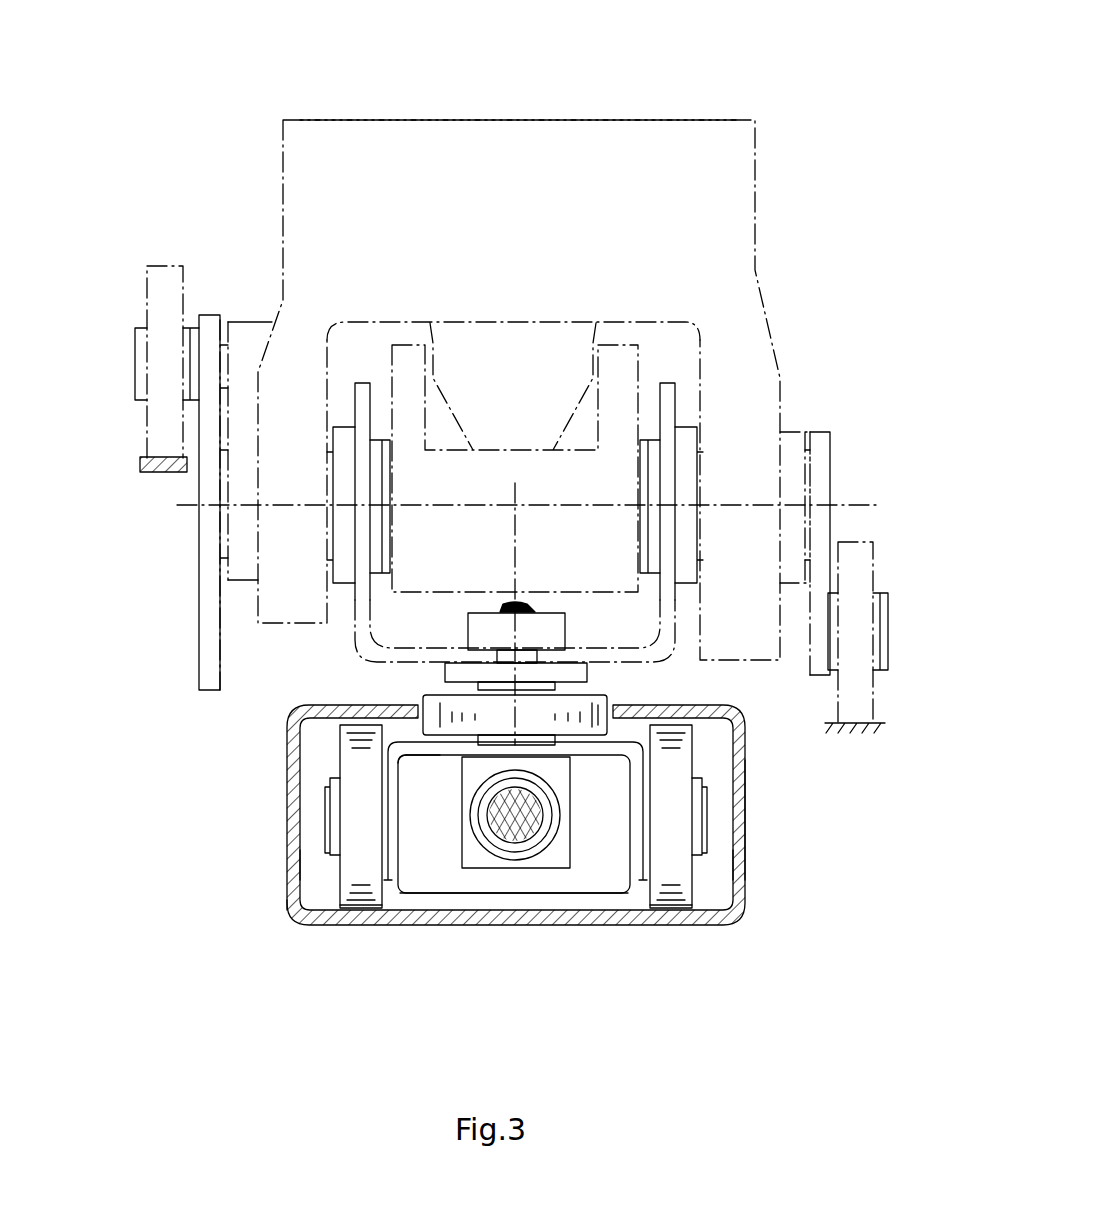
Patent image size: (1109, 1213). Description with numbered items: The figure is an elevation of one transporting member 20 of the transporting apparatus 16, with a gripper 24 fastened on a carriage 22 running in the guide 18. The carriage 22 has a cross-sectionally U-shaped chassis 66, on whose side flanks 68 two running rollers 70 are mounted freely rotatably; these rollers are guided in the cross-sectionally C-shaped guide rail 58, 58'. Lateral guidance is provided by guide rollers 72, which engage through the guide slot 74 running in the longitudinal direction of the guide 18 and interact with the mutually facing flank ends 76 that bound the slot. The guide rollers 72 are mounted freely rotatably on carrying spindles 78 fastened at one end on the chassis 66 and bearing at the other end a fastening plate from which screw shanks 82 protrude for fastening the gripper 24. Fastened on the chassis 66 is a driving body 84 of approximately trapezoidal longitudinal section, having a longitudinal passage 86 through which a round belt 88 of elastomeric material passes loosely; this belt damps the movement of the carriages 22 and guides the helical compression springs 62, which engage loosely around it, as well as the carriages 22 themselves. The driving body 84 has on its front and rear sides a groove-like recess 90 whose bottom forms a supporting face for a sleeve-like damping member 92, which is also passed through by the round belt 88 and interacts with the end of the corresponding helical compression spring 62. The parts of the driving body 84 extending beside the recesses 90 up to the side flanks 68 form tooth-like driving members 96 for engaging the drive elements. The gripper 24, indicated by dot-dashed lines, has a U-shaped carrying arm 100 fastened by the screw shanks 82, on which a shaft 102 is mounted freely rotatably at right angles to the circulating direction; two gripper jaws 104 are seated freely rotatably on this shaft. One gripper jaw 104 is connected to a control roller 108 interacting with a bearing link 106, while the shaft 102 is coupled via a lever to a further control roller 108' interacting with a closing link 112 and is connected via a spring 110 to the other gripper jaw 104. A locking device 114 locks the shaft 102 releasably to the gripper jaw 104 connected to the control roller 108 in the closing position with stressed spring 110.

The transporting apparatus 16 is at (837, 61).
The guide 18 is at (251, 942).
The transporting member 20 is at (186, 130).
The carriage 22 is at (315, 869).
The gripper 24 is at (766, 219).
The guide rail 58 is at (589, 815).
The guide rail 58' is at (757, 828).
The helical compression spring 62 is at (503, 858).
The chassis 66 is at (370, 753).
The side flank 68 is at (392, 903).
The running roller 70 is at (350, 762).
The guide roller 72 is at (425, 698).
The guide slot 74 is at (608, 696).
The flank end 76 is at (415, 702).
The carrying spindle 78 is at (540, 742).
The screw shank 82 is at (520, 598).
The driving body 84 is at (511, 907).
The passage 86 is at (548, 835).
The round belt 88 is at (535, 858).
The recess 90 is at (477, 770).
The damping member 92 is at (482, 843).
The driving member 96 is at (420, 868).
The carrying arm 100 is at (365, 482).
The shaft 102 is at (843, 503).
The gripper jaw 104 is at (530, 147).
The bearing link 106 is at (142, 465).
The control roller 108 is at (144, 362).
The control roller 108' is at (896, 632).
The spring 110 is at (563, 324).
The closing link 112 is at (880, 731).
The locking device 114 is at (203, 652).